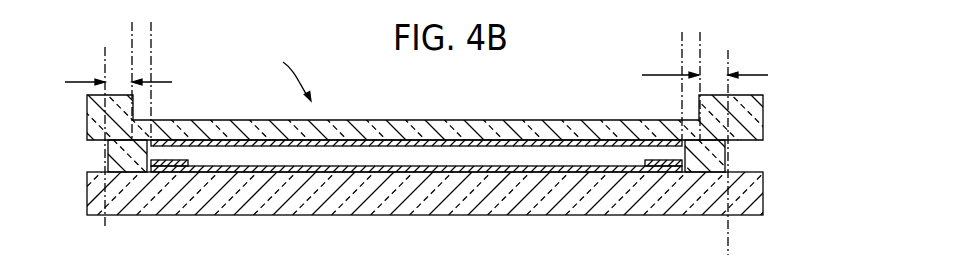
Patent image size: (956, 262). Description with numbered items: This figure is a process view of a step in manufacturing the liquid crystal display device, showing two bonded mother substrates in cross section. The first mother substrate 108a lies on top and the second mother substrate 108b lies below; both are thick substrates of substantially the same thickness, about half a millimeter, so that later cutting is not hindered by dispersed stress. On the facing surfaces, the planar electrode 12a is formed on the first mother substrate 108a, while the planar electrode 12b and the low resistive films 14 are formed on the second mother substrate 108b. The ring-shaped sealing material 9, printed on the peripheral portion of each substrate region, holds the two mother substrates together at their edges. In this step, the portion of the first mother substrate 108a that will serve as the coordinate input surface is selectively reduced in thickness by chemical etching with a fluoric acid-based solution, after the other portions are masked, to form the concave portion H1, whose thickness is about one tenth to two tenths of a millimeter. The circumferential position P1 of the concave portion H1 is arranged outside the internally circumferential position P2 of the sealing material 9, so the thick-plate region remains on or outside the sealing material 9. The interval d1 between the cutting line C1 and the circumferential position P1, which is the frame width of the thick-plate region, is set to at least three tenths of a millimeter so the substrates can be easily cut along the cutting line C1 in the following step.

The first mother substrate 108a is at (761, 104).
The second mother substrate 108b is at (763, 177).
The sealing material 9 is at (129, 168).
The planar electrode 12a is at (332, 141).
The planar electrode 12b is at (384, 166).
The low resistive films 14 is at (165, 160).
The cutting line C1 is at (104, 50).
The circumferential position of the concave portion P1 is at (131, 28).
The internally circumferential position of the sealing material P2 is at (152, 28).
The interval d1 is at (415, 69).
The concave portion H1 is at (284, 75).